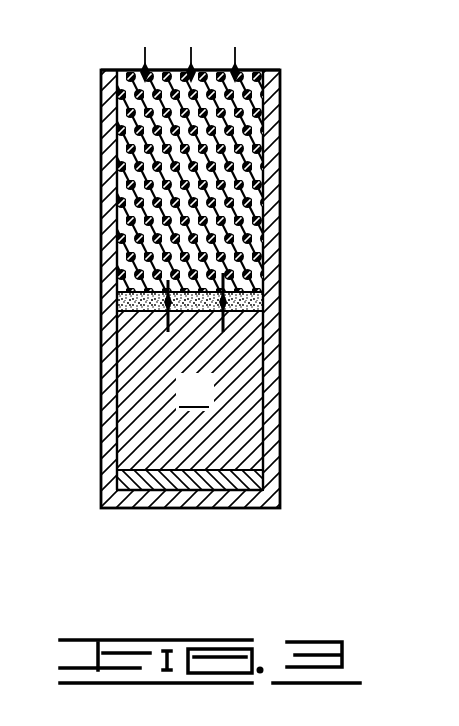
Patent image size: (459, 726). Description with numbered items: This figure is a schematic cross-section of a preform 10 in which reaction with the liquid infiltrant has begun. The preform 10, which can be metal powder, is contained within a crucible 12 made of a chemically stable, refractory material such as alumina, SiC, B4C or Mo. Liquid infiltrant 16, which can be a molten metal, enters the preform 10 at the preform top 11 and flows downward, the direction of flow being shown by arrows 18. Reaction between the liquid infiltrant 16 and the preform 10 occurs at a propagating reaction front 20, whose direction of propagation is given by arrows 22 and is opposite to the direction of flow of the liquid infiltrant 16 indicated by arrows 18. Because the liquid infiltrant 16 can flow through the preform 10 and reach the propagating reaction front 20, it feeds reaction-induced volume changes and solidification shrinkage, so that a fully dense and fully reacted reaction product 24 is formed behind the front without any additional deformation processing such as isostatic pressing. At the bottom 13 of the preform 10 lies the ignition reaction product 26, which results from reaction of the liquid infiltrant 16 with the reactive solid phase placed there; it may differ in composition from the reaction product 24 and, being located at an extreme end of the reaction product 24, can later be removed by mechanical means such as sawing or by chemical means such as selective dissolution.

The preform 10 is at (273, 213).
The preform top 11 is at (262, 72).
The crucible 12 is at (108, 379).
The bottom of preform 13 is at (141, 490).
The liquid infiltrant 16 is at (126, 183).
The arrows 18 is at (145, 61).
The propagating reaction front 20 is at (255, 303).
The arrows 22 is at (223, 321).
The reaction product 24 is at (190, 390).
The ignition reaction product 26 is at (238, 481).